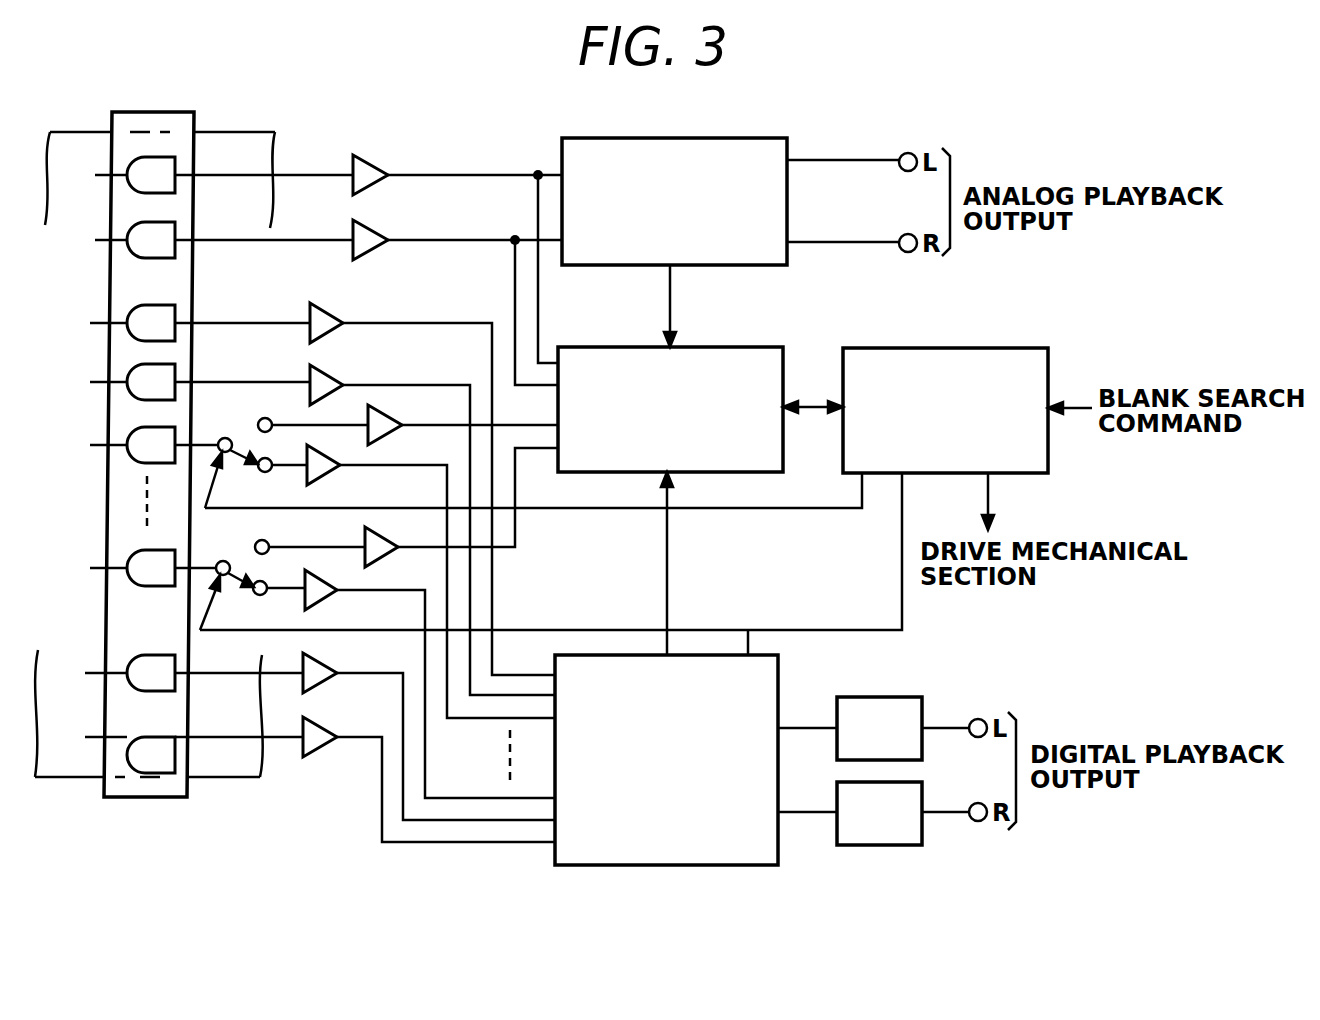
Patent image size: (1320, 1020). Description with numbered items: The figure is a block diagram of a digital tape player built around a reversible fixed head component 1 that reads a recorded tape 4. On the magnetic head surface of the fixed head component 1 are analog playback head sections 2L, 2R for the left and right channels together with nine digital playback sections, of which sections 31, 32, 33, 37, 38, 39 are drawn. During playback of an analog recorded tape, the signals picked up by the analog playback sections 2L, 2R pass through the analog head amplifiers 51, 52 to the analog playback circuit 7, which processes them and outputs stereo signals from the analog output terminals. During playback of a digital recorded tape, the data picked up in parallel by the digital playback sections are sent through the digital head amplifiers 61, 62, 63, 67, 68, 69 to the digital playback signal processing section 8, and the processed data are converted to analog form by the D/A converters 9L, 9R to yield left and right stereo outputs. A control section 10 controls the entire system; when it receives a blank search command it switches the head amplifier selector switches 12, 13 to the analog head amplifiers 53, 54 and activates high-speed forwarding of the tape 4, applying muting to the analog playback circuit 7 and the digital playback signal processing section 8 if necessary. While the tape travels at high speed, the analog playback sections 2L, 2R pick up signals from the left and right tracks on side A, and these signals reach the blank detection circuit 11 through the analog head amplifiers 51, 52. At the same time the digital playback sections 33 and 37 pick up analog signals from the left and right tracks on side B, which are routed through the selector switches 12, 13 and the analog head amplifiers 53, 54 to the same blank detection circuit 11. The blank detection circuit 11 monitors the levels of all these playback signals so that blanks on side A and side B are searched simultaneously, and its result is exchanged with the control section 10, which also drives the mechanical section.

The reversible fixed head component 1 is at (145, 112).
The recorded tape 4 is at (50, 130).
The analog playback head section 2L is at (120, 175).
The analog playback head section 2R is at (120, 240).
The digital playback section 31 is at (115, 323).
The digital playback section 32 is at (115, 382).
The digital playback section 33 is at (115, 445).
The digital playback section 37 is at (112, 568).
The digital playback section 38 is at (112, 673).
The digital playback section 39 is at (112, 747).
The analog head amplifier 51 is at (377, 166).
The analog head amplifier 52 is at (375, 232).
The analog head amplifier 53 is at (391, 415).
The analog head amplifier 54 is at (387, 538).
The digital head amplifier 61 is at (333, 312).
The digital head amplifier 62 is at (333, 375).
The digital head amplifier 63 is at (328, 476).
The digital head amplifier 67 is at (325, 600).
The digital head amplifier 68 is at (323, 685).
The digital head amplifier 69 is at (320, 750).
The analog playback circuit 7 is at (750, 138).
The digital playback signal processing section 8 is at (738, 655).
The D/A converter 9L is at (890, 697).
The D/A converter 9R is at (905, 782).
The control section 10 is at (1011, 348).
The blank detection circuit 11 is at (748, 347).
The head amplifier selector switch 12 is at (246, 454).
The head amplifier selector switch 13 is at (244, 580).